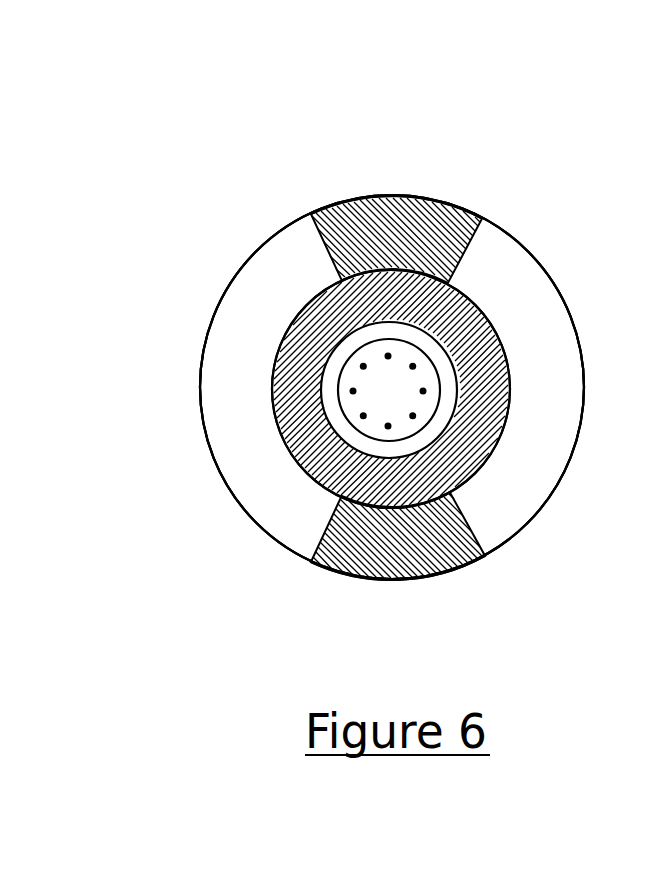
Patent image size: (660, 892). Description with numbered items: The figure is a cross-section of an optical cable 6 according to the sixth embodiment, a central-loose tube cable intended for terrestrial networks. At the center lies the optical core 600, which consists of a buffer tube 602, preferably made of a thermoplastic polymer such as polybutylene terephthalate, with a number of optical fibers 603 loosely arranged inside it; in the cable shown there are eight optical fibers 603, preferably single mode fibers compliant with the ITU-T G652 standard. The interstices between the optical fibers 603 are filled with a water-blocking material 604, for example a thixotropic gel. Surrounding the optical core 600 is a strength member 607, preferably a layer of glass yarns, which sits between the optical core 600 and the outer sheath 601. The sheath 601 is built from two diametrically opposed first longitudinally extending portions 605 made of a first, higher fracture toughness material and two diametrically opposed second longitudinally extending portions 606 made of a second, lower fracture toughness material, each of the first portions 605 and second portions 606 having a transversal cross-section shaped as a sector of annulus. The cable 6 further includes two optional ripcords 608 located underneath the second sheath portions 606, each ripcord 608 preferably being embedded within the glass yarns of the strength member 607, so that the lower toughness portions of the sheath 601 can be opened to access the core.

The optical cable 6 is at (267, 167).
The optical core 600 is at (327, 337).
The sheath 601 is at (482, 200).
The buffer tube 602 is at (458, 388).
The optical fibers 603 is at (413, 416).
The water-blocking material 604 is at (368, 403).
The first longitudinally extending portions 605 is at (538, 258).
The second longitudinally extending portions 606 is at (402, 195).
The strength member 607 is at (272, 388).
The ripcords 608 is at (378, 275).